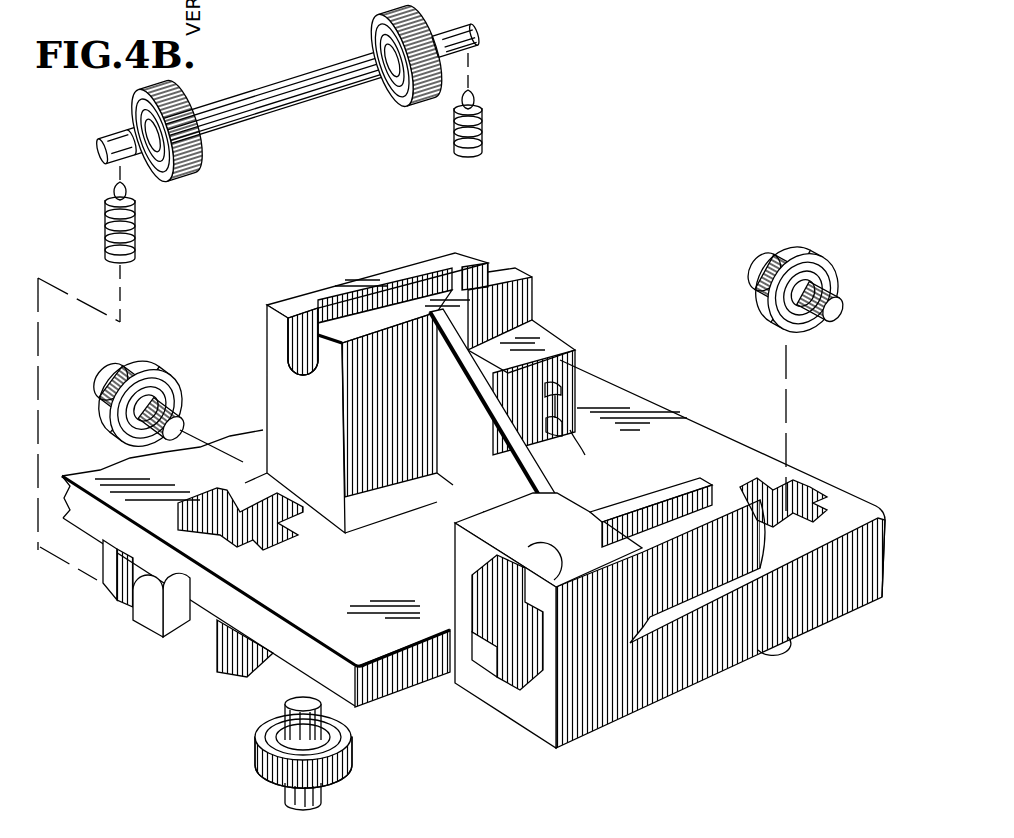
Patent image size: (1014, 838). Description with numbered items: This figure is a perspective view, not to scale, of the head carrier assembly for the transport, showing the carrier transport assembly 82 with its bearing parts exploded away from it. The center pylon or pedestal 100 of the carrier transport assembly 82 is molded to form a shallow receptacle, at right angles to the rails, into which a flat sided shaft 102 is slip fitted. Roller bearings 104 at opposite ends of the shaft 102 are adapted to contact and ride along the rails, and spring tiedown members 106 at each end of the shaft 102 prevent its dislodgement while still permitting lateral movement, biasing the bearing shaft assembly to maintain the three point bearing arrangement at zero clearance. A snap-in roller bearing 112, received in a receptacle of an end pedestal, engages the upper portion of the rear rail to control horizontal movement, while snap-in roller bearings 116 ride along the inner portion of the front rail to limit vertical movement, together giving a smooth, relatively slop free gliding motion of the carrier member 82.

The carrier transport assembly 82 is at (345, 588).
The center pylon or pedestal 100 is at (318, 295).
The flat sided shaft 102 is at (272, 95).
The roller bearing 104 is at (126, 97).
The spring tiedown member 106 is at (105, 232).
The snap-in roller bearing 112 is at (252, 758).
The snap-in roller bearing 116 is at (160, 360).